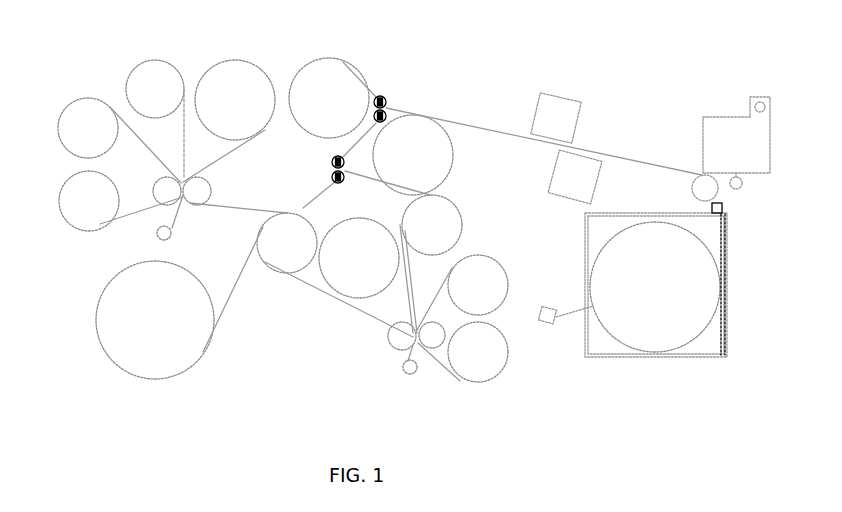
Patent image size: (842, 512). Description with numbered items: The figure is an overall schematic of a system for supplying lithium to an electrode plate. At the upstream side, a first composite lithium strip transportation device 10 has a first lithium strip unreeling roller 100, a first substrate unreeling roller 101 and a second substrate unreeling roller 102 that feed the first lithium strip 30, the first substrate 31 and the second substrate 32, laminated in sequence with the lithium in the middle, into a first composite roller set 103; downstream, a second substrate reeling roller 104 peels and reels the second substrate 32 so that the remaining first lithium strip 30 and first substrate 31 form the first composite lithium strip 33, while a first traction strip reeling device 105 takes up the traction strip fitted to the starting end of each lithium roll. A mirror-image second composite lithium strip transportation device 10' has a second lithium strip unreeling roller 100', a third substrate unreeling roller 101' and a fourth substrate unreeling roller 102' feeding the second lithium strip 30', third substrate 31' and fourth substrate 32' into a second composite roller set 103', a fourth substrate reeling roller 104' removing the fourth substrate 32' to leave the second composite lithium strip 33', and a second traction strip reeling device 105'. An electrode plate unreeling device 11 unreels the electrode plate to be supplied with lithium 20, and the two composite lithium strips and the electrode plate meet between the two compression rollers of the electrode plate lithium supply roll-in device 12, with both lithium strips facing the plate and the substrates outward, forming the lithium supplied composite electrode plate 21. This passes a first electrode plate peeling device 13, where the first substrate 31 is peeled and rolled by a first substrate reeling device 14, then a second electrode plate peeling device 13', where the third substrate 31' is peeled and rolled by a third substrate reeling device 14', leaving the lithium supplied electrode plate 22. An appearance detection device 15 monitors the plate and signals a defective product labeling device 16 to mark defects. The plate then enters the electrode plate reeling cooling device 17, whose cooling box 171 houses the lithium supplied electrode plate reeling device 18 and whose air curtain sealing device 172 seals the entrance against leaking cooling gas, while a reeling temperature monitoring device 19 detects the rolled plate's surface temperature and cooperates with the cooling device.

The first composite lithium strip transportation device 10 is at (148, 125).
The first lithium strip unreeling roller 100 is at (132, 85).
The first substrate unreeling roller 101 is at (246, 90).
The second substrate unreeling roller 102 is at (71, 116).
The first composite roller set 103 is at (204, 185).
The second substrate reeling roller 104 is at (59, 201).
The first traction strip reeling device 105 is at (135, 237).
The first lithium strip 30 is at (204, 133).
The first substrate 31 is at (233, 156).
The second substrate 32 is at (141, 145).
The first composite lithium strip 33 is at (238, 229).
The electrode plate unreeling device 11 is at (132, 323).
The electrode plate lithium supply roll-in device 12 is at (276, 258).
The electrode plate to be supplied with lithium 20 is at (232, 300).
The lithium supplied composite electrode plate 21 is at (317, 192).
The lithium supplied electrode plate 22 is at (480, 128).
The first electrode plate peeling device 13 is at (363, 159).
The second electrode plate peeling device 13' is at (382, 92).
The first substrate reeling device 14 is at (435, 155).
The third substrate reeling device 14' is at (339, 89).
The appearance detection device 15 is at (588, 170).
The defective product labeling device 16 is at (703, 135).
The electrode plate reeling cooling device 17 is at (725, 253).
The cooling box 171 is at (727, 252).
The air curtain sealing device 172 is at (725, 210).
The lithium supplied electrode plate reeling device 18 is at (698, 298).
The reeling temperature monitoring device 19 is at (548, 323).
The second composite lithium strip transportation device 10' is at (433, 382).
The second lithium strip unreeling roller 100' is at (460, 225).
The third substrate unreeling roller 101' is at (361, 248).
The fourth substrate unreeling roller 102' is at (499, 282).
The second composite roller set 103' is at (382, 343).
The fourth substrate reeling roller 104' is at (501, 356).
The second traction strip reeling device 105' is at (381, 372).
The second lithium strip 30' is at (425, 279).
The third substrate 31' is at (387, 282).
The fourth substrate 32' is at (471, 300).
The second composite lithium strip 33' is at (339, 308).